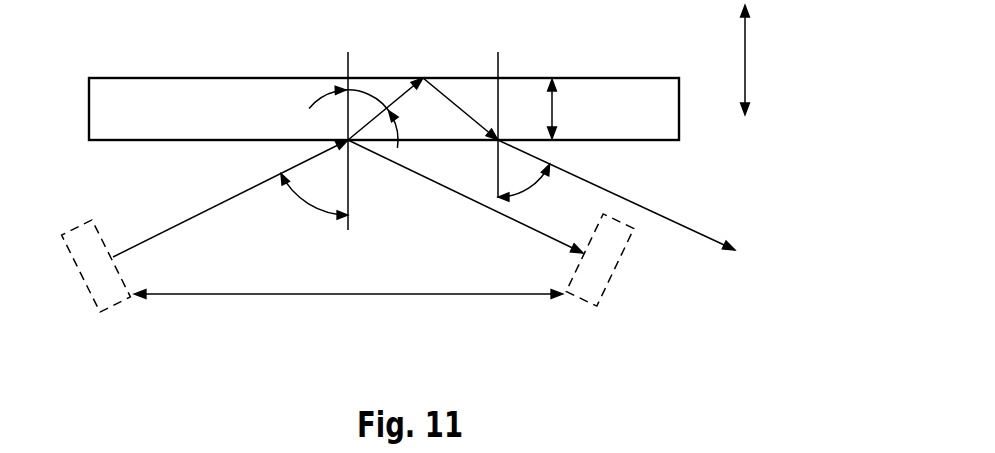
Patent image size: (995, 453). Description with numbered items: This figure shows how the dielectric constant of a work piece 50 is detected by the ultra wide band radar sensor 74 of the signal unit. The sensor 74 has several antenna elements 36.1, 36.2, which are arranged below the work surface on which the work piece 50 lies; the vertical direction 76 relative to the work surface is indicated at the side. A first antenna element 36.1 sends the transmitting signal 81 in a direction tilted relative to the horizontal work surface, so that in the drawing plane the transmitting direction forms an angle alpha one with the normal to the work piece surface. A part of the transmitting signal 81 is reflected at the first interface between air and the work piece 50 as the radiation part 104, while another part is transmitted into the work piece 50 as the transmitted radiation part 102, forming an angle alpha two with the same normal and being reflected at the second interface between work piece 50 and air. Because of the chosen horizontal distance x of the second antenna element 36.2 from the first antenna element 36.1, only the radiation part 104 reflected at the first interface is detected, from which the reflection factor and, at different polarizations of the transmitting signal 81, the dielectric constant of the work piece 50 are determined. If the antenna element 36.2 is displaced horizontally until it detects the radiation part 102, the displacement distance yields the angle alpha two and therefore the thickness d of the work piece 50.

The work piece 50 is at (628, 88).
The vertical direction 76 is at (745, 60).
The transmitting signal 81 is at (232, 198).
The transmitted radiation part 102 is at (458, 110).
The reflected radiation part 104 is at (466, 199).
The antenna element 36.1 is at (120, 273).
The antenna element 36.2 is at (618, 268).
The ultra wide band radar sensor 74 is at (136, 322).
The diameter of the work piece d is at (553, 106).
The horizontal distance x is at (348, 296).